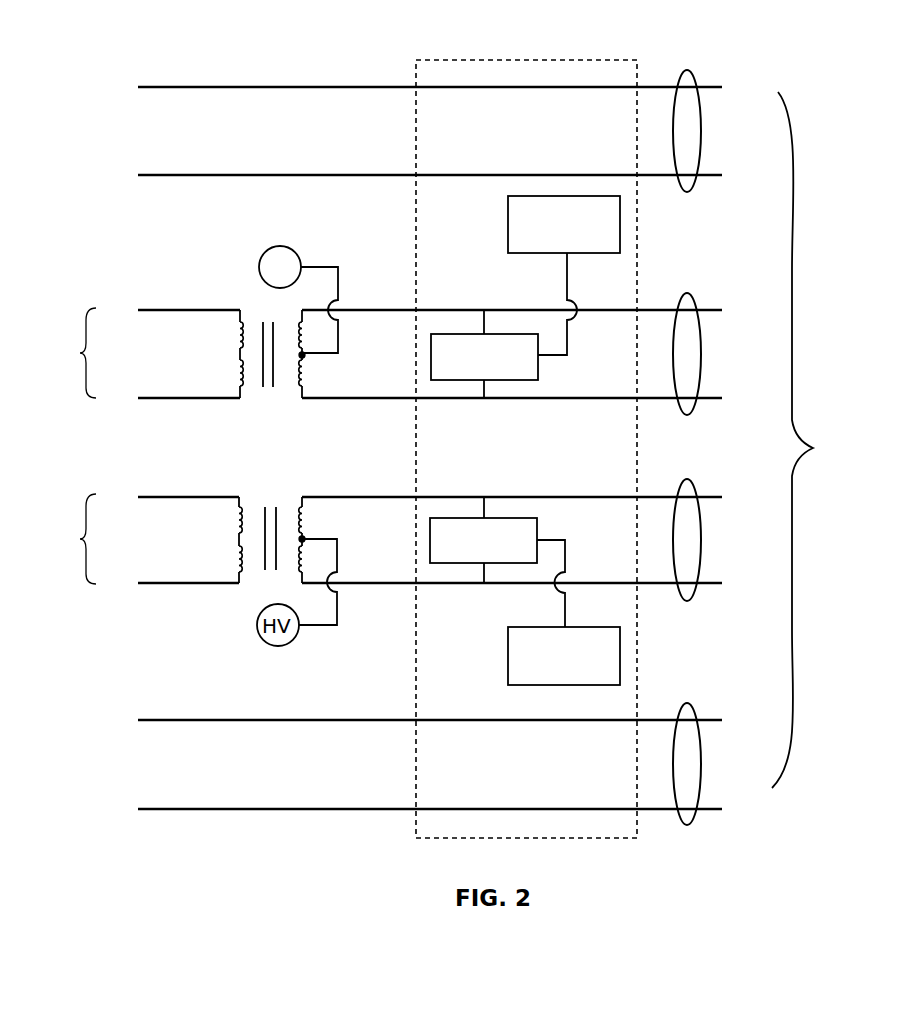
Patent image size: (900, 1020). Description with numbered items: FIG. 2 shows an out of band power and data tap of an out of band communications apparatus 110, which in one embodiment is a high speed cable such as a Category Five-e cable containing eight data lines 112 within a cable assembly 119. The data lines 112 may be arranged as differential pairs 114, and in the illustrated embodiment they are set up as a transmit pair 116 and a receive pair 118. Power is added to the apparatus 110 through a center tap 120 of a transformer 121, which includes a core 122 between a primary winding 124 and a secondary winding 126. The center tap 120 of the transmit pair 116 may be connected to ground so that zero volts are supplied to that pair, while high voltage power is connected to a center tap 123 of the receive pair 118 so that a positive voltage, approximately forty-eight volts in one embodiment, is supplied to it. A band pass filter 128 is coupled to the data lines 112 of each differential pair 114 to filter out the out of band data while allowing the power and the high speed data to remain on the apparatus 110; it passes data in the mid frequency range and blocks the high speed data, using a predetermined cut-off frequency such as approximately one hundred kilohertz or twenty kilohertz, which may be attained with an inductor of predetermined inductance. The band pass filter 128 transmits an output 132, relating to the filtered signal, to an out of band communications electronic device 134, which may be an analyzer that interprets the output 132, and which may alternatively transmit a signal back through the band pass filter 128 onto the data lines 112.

The out of band communications apparatus 110 is at (475, 59).
The data lines 112 is at (172, 86).
The differential pair 114 is at (687, 72).
The transmit pair 116 is at (66, 353).
The receive pair 118 is at (66, 539).
The cable assembly 119 is at (818, 440).
The center tap 120 is at (305, 357).
The transformer 121 is at (275, 316).
The core 122 is at (271, 394).
The center tap 123 is at (305, 537).
The primary winding 124 is at (238, 297).
The secondary winding 126 is at (307, 297).
The band pass filter 128 is at (431, 355).
The output 132 is at (552, 355).
The out of band communications electronic device 134 is at (508, 222).